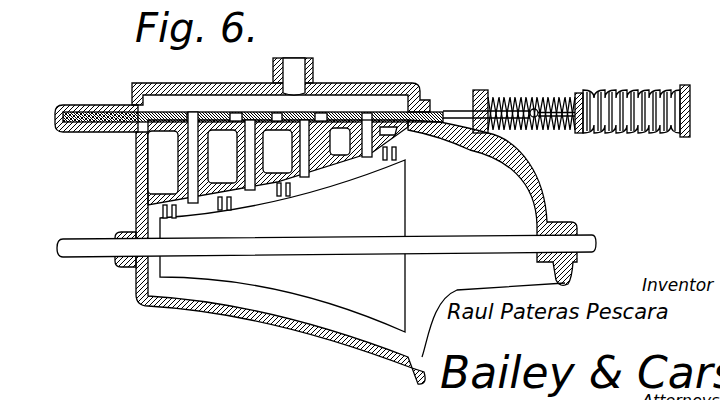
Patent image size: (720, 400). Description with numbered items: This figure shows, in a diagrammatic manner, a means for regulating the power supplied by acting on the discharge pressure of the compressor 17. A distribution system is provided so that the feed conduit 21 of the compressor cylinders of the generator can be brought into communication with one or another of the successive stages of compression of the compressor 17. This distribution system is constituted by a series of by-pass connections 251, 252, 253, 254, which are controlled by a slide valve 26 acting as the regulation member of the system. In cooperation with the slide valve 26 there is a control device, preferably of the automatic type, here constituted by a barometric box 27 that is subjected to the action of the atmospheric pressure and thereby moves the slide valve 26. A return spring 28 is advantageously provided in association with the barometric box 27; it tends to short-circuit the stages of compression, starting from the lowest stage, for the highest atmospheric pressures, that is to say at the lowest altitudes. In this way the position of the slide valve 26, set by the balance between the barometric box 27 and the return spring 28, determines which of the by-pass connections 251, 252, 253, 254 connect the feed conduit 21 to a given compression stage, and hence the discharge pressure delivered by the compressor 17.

The compressor 17 is at (240, 247).
The feed conduit 21 is at (295, 70).
The slide valve 26 is at (378, 117).
The barometric box 27 is at (627, 113).
The return spring 28 is at (523, 100).
The by-pass connection 251 is at (396, 150).
The by-pass connection 252 is at (306, 163).
The by-pass connection 253 is at (250, 176).
The by-pass connection 254 is at (193, 152).